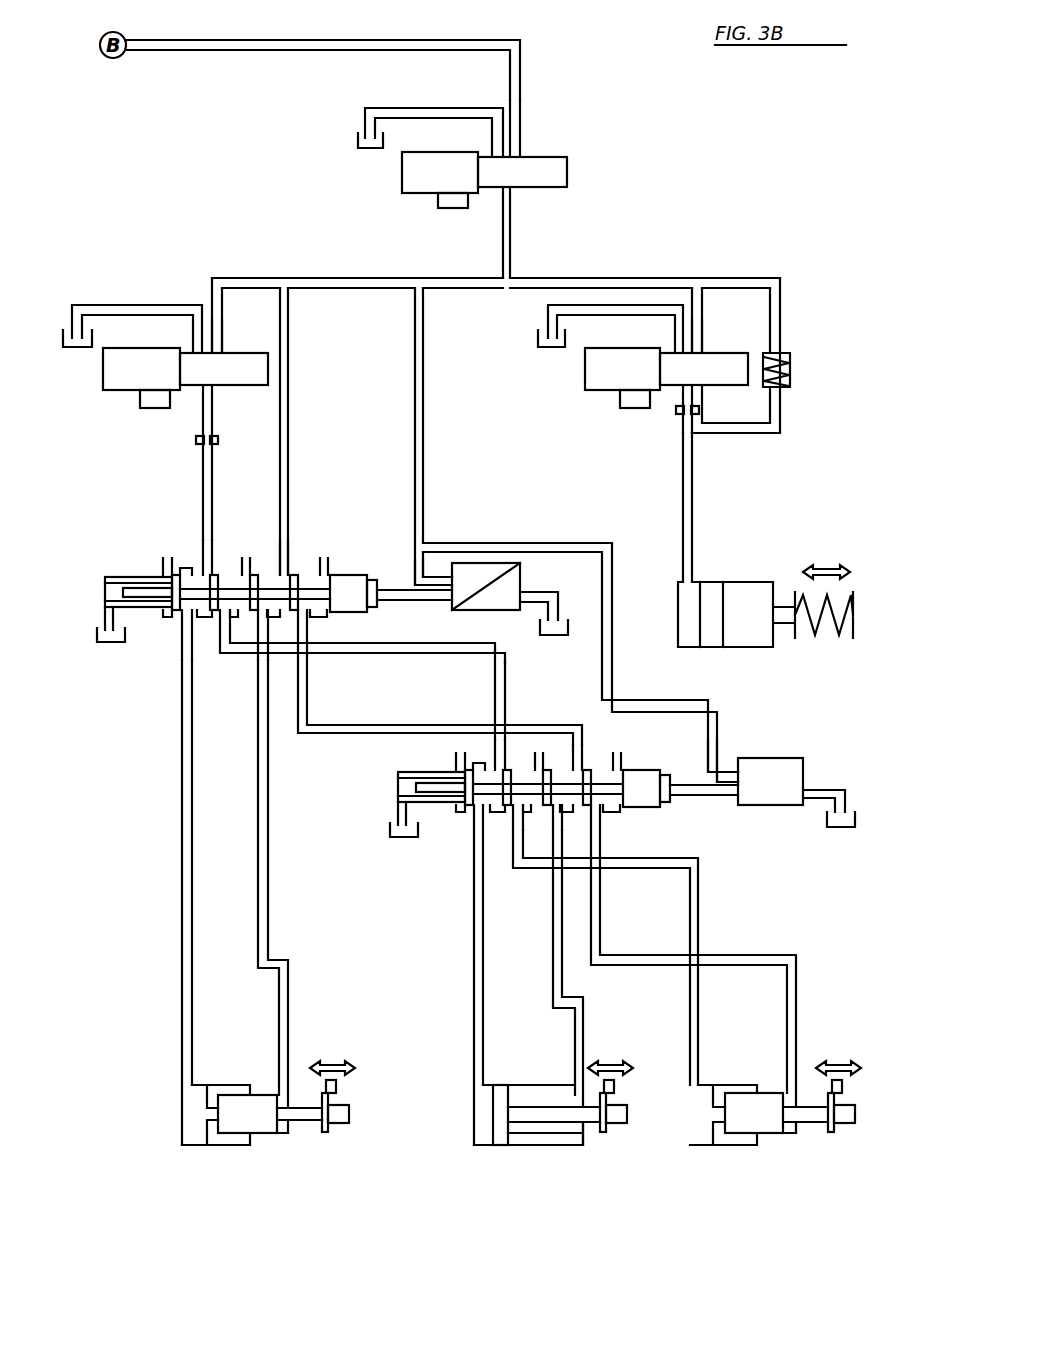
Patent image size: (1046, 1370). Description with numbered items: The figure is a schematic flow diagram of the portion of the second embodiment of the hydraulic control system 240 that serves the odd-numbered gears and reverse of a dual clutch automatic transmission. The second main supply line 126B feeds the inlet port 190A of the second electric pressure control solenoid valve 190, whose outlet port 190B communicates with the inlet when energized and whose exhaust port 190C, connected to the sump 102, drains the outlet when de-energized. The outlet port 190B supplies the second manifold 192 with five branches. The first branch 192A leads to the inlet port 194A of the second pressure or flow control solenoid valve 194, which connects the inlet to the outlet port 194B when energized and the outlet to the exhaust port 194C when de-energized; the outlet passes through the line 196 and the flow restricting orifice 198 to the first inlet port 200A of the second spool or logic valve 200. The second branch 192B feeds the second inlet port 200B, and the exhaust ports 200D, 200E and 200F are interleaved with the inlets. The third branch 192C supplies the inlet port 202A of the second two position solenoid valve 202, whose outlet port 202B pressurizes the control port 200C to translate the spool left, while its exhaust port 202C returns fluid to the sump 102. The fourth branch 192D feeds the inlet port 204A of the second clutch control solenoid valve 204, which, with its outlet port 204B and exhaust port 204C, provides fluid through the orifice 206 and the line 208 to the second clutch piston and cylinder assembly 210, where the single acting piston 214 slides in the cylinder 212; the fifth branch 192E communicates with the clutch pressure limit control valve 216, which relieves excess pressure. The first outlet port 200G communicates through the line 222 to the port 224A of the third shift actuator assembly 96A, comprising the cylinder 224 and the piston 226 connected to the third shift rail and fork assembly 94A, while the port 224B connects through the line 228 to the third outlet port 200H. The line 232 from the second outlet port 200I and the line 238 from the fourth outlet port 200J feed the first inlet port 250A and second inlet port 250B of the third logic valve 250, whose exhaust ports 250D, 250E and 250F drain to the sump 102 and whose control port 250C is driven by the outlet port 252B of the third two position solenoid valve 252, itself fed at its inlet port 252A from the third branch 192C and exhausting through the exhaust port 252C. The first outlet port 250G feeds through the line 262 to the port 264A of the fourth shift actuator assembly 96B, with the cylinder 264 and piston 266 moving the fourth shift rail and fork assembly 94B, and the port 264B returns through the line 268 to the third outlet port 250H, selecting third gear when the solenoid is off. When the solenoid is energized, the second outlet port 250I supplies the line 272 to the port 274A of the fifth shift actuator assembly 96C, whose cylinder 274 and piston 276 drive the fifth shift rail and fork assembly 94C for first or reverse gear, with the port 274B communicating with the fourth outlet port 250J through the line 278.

The third shift rail and fork assembly 94A is at (336, 1127).
The fourth shift rail and fork assembly 94B is at (615, 1127).
The fifth shift rail and fork assembly 94C is at (842, 1127).
The third shift actuator assembly 96A is at (220, 1116).
The fourth shift actuator assembly 96B is at (521, 1121).
The fifth shift actuator assembly 96C is at (740, 1131).
The sump 102 is at (364, 136).
The second main supply line 126B is at (521, 90).
The second electric pressure control solenoid valve 190 is at (412, 214).
The inlet port 190A is at (521, 148).
The outlet port 190B is at (505, 195).
The exhaust port 190C is at (490, 150).
The second manifold 192 is at (510, 275).
The first branch 192A is at (211, 279).
The second branch 192B is at (289, 382).
The third branch 192C is at (414, 338).
The fourth branch 192D is at (703, 305).
The fifth branch 192E is at (781, 305).
The second electric pressure or flow control solenoid valve 194 is at (99, 414).
The inlet port 194A is at (222, 350).
The outlet port 194B is at (212, 397).
The exhaust port 194C is at (195, 350).
The line 196 is at (196, 440).
The flow restricting orifice 198 is at (217, 445).
The second two position spool or logic valve 200 is at (97, 660).
The first inlet port 200A is at (205, 570).
The second inlet port 200B is at (303, 654).
The control port 200C is at (380, 602).
The exhaust port 200D is at (165, 572).
The exhaust port 200E is at (284, 572).
The exhaust port 200F is at (332, 572).
The first outlet port 200G is at (185, 616).
The third outlet port 200H is at (262, 616).
The second outlet port 200I is at (243, 572).
The fourth outlet port 200J is at (318, 618).
The second two position (on-off) solenoid valve 202 is at (526, 585).
The inlet port 202A is at (436, 578).
The outlet port 202B is at (458, 606).
The exhaust port 202C is at (527, 604).
The second electric pressure or flow clutch control solenoid valve 204 is at (594, 403).
The inlet port 204A is at (702, 350).
The outlet port 204B is at (695, 394).
The exhaust port 204C is at (675, 350).
The orifice 206 is at (676, 413).
The line 208 is at (693, 492).
The second clutch piston and cylinder assembly 210 is at (780, 544).
The cylinder 212 is at (683, 592).
The single acting piston 214 is at (716, 600).
The clutch pressure limit control valve 216 is at (791, 380).
The line 222 is at (182, 832).
The cylinder or housing 224 is at (213, 1137).
The port 224A is at (183, 1089).
The port 224B is at (280, 1092).
The piston 226 is at (255, 1117).
The line 228 is at (258, 832).
The line 232 is at (510, 725).
The line 238 is at (310, 736).
The hydraulic control system 240 is at (682, 170).
The third spool or logic valve 250 is at (392, 862).
The first inlet port 250A is at (545, 768).
The second inlet port 250B is at (582, 750).
The control port 250C is at (672, 797).
The exhaust port 250D is at (497, 768).
The exhaust port 250E is at (562, 712).
The exhaust port 250F is at (625, 768).
The first outlet port 250G is at (470, 812).
The third outlet port 250H is at (556, 813).
The second outlet port 250I is at (515, 813).
The fourth outlet port 250J is at (603, 813).
The third two position (on-off) solenoid valve 252 is at (794, 706).
The inlet port 252A is at (731, 775).
The outlet port 252B is at (702, 797).
The exhaust port 252C is at (818, 790).
The line 262 is at (474, 977).
The cylinder or housing 264 is at (545, 1150).
The port 264A is at (475, 1089).
The port 264B is at (578, 1092).
The piston 266 is at (499, 1137).
The line 268 is at (553, 977).
The line 272 is at (690, 1012).
The cylinder or housing 274 is at (717, 1137).
The port 274A is at (690, 1089).
The port 274B is at (787, 1092).
The piston 276 is at (760, 1117).
The line 278 is at (798, 1012).